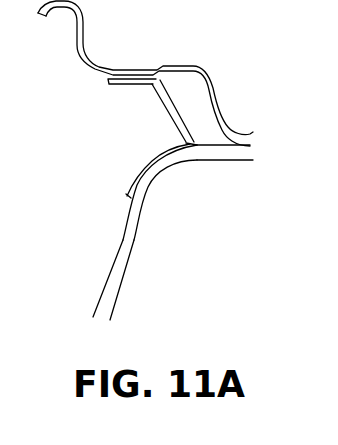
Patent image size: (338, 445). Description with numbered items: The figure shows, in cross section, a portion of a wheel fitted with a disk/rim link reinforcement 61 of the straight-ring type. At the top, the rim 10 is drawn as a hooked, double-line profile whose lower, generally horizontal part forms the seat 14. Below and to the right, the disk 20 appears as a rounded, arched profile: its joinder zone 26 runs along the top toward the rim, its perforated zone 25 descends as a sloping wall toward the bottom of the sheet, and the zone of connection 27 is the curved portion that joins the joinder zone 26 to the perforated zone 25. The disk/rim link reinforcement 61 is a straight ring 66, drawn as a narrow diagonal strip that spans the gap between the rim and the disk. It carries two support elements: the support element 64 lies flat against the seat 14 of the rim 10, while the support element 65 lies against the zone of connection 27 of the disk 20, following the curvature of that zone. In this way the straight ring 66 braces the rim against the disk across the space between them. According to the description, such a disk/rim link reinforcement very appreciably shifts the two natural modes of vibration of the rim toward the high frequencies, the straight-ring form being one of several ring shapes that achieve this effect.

The rim 10 is at (214, 48).
The seat 14 is at (130, 72).
The disk 20 is at (184, 235).
The perforated zone 25 is at (135, 238).
The joinder zone 26 is at (238, 152).
The zone of connection 27 is at (164, 166).
The disk/rim link reinforcement 61 is at (165, 114).
The support element 64 is at (128, 87).
The support element 65 is at (137, 175).
The straight ring 66 is at (173, 107).